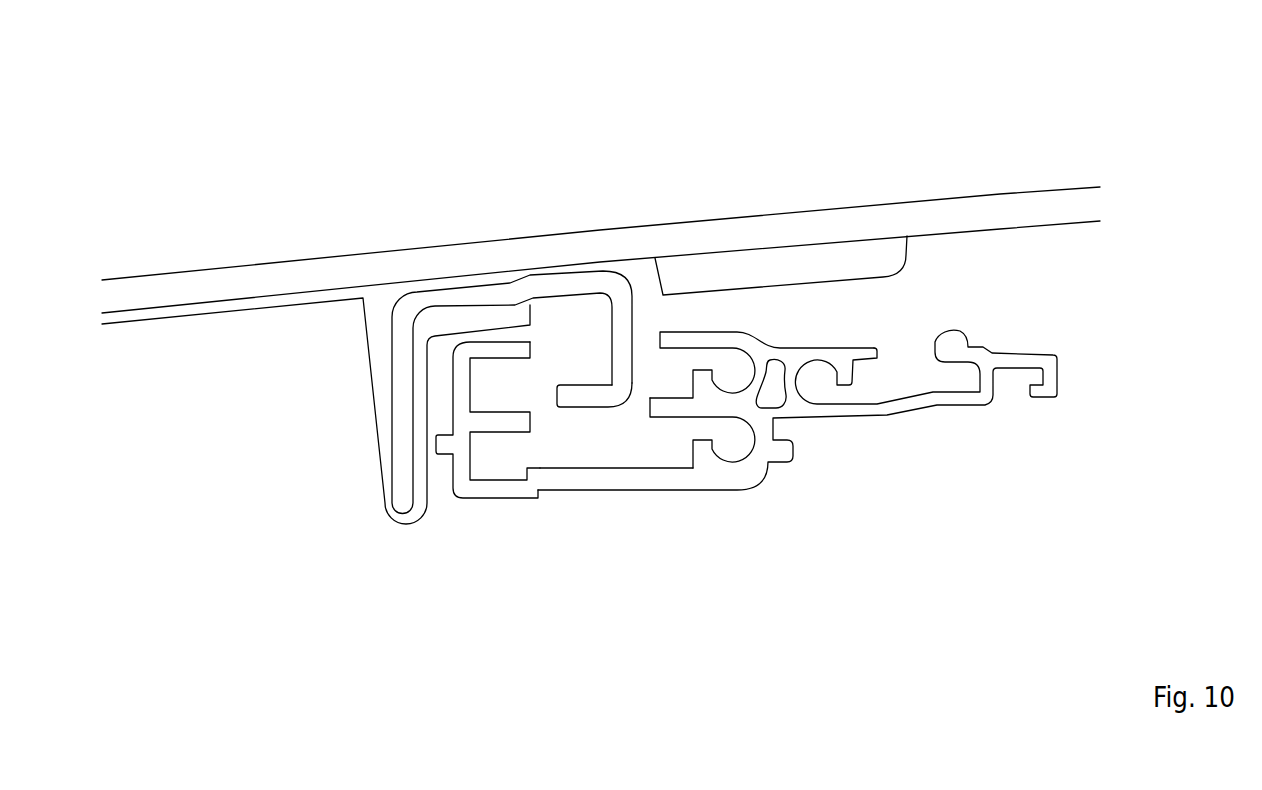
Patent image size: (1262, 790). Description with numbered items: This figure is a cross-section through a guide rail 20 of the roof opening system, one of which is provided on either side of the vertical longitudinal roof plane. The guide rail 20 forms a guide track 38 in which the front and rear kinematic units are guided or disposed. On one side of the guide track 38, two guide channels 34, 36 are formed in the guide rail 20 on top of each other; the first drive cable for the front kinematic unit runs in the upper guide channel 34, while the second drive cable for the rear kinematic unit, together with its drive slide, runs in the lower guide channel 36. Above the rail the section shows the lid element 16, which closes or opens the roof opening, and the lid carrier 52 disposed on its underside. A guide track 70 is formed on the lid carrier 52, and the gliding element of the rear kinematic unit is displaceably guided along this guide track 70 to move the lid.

The lid element 16 is at (905, 222).
The guide rail 20 is at (557, 482).
The guide channel 34 is at (727, 362).
The guide channel 36 is at (737, 450).
The guide track 38 is at (507, 460).
The lid carrier 52 is at (613, 292).
The guide track 70 is at (575, 393).